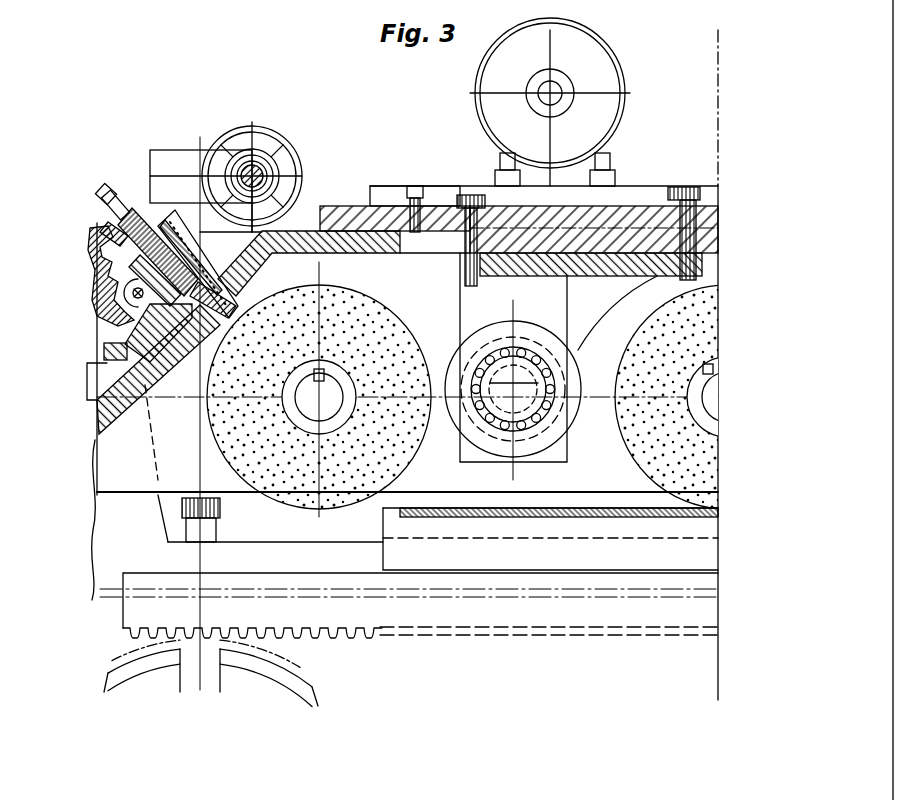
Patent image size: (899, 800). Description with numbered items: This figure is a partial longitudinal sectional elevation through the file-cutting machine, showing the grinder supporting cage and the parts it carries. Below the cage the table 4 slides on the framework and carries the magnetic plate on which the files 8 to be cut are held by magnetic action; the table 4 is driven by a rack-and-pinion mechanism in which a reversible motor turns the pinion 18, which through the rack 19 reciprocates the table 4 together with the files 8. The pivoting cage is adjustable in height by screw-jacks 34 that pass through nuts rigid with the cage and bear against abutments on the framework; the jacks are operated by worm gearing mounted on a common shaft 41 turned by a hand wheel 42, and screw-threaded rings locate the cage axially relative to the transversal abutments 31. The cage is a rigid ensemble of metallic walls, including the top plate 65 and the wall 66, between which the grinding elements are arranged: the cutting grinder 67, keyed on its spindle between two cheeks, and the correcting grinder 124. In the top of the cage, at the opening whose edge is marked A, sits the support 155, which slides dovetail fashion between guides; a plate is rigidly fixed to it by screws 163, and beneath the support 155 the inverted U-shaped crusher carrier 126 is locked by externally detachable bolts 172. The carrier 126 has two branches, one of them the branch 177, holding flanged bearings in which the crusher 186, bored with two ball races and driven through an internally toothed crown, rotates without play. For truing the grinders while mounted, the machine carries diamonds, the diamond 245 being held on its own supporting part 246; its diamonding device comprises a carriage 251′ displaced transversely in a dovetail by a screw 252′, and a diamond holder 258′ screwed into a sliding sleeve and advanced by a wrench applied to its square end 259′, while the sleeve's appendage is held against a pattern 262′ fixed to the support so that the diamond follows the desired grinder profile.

The table 4 is at (150, 573).
The files 8 is at (474, 510).
The pinion 18 is at (124, 672).
The rack 19 is at (126, 632).
The transversal abutments 31 is at (142, 505).
The screw-jacks 34 is at (218, 508).
The common shaft 41 is at (250, 168).
The hand wheel 42 is at (286, 146).
The top plate of the cage 65 is at (353, 222).
The metallic wall of the cage 66 is at (198, 345).
The cutting grinder 67 is at (380, 325).
The correcting grinder 124 is at (680, 342).
The crusher carrier 126 is at (624, 290).
The support 155 is at (605, 228).
The screw 163 is at (415, 198).
The bolt 172 is at (470, 195).
The branch of the crusher carrier 177 is at (470, 446).
The crusher 186 is at (545, 332).
The diamond 245 is at (309, 263).
The supporting part 246 is at (108, 270).
The carriage 251′ is at (136, 207).
The screw 252′ is at (150, 330).
The diamond holder 258′ is at (140, 277).
The square end 259′ is at (106, 184).
The pattern 262′ is at (108, 224).
The opening edge point A is at (405, 242).